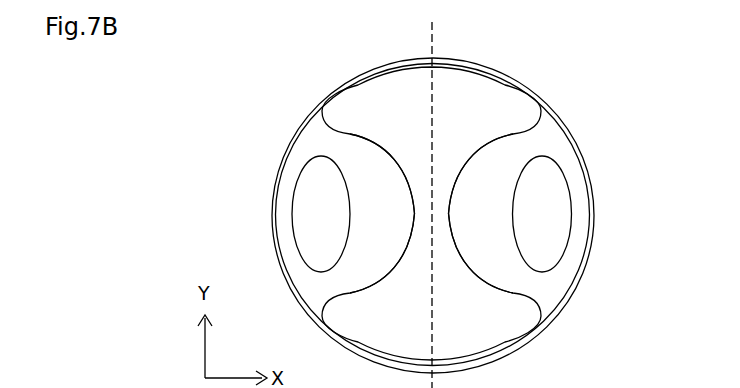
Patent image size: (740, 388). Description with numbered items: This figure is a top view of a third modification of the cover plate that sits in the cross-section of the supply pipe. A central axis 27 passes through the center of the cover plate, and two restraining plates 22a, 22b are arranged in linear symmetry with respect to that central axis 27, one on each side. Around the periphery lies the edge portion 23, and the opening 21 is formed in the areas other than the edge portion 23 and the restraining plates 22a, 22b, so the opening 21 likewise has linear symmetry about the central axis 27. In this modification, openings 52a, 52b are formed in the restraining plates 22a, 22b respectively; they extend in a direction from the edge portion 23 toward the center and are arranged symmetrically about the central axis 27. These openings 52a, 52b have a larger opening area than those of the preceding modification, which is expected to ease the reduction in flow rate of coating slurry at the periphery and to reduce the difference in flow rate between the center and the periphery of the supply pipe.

The opening 21 is at (512, 100).
The restraining plate 22a is at (497, 163).
The restraining plate 22b is at (350, 165).
The edge portion 23 is at (520, 342).
The central axis 27 is at (431, 38).
The opening 52a is at (556, 222).
The opening 52b is at (300, 216).